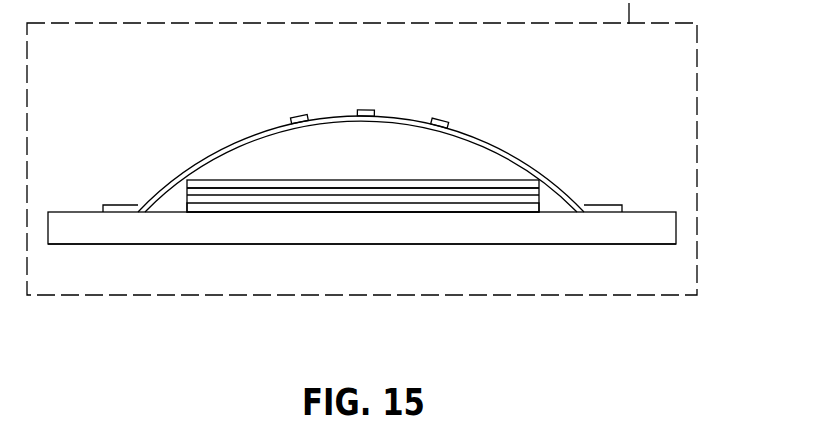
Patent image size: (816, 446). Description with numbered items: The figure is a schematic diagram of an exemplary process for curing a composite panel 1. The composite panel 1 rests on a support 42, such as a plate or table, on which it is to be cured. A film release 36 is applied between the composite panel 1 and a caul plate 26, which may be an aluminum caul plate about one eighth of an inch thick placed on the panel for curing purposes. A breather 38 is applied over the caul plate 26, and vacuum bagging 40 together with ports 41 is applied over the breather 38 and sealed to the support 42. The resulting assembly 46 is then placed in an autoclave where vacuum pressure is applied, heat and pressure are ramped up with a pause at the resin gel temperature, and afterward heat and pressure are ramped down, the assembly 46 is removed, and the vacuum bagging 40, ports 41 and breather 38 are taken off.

The composite panel 1 is at (515, 210).
The caul plate 26 is at (325, 192).
The film release 36 is at (433, 198).
The breather 38 is at (435, 183).
The vacuum bagging 40 is at (260, 135).
The ports 41 is at (368, 108).
The support 42 is at (243, 228).
The assembly 46 is at (536, 130).